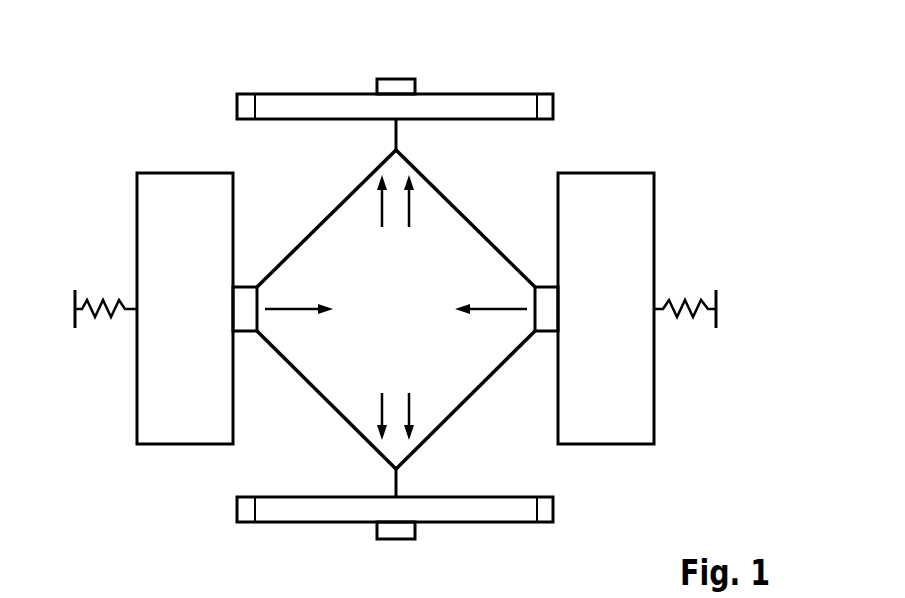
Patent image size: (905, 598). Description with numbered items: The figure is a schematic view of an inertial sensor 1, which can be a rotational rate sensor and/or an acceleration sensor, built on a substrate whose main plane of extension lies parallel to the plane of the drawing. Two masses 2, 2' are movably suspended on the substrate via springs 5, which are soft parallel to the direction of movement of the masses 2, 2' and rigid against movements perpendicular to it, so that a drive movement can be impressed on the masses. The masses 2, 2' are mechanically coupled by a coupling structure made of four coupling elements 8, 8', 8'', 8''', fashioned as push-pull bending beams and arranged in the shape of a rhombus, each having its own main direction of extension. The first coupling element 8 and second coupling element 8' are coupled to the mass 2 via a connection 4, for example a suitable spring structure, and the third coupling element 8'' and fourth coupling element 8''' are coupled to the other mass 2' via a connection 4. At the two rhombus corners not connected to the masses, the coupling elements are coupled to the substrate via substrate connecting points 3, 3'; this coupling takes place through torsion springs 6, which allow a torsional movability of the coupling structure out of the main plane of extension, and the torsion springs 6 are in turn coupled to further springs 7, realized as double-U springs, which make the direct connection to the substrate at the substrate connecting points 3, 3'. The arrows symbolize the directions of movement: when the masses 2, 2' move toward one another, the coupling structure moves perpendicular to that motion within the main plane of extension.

The inertial sensor 1 is at (653, 60).
The mass 2 is at (185, 283).
The mass 2' is at (606, 283).
The substrate connecting point 3 is at (396, 61).
The substrate connecting point 3' is at (396, 556).
The connection 4 is at (251, 287).
The spring 5 is at (107, 307).
The torsion spring 6 is at (397, 130).
The further spring 7 is at (553, 106).
The first coupling element 8 is at (326, 218).
The second coupling element 8' is at (326, 400).
The third coupling element 8'' is at (470, 400).
The fourth coupling element 8''' is at (472, 218).